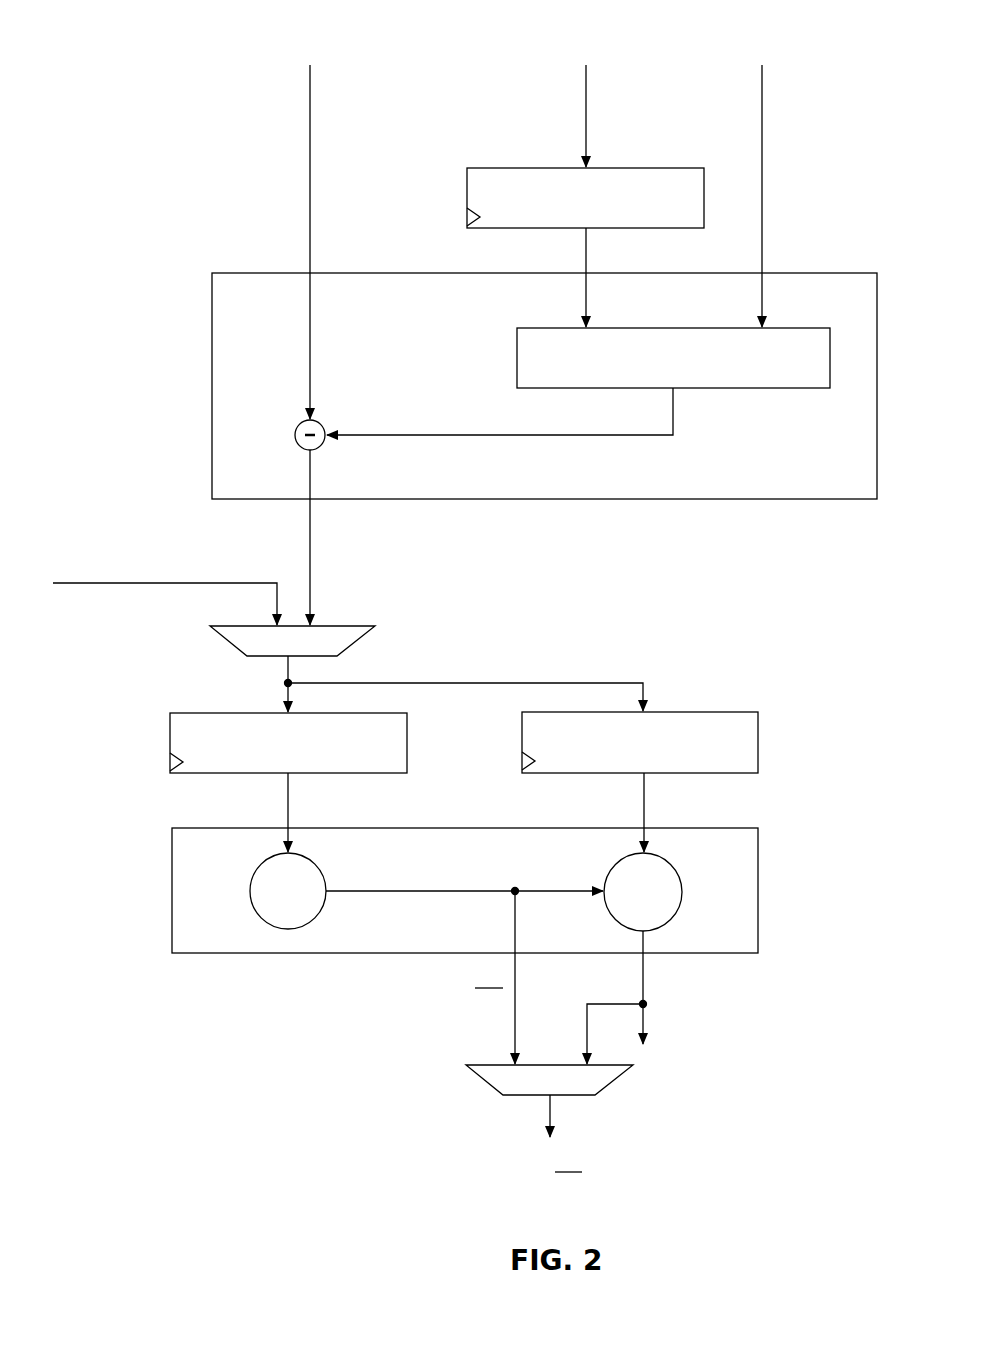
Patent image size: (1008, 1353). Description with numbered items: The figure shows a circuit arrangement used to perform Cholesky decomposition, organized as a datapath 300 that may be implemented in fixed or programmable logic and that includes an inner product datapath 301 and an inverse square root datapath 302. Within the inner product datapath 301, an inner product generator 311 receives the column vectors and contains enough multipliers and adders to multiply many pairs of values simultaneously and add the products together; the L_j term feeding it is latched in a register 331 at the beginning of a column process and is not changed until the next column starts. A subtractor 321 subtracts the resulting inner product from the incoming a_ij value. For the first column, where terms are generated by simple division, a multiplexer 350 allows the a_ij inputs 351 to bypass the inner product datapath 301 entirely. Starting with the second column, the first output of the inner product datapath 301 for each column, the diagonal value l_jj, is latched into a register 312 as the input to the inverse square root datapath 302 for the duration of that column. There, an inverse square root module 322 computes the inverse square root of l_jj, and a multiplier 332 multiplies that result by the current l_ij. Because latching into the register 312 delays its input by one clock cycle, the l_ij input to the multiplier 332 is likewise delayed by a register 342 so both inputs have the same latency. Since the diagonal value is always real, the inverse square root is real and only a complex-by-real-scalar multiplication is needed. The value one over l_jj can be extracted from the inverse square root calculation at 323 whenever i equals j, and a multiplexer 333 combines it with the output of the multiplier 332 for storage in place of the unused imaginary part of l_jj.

The datapath 300 is at (133, 68).
The inner product datapath 301 is at (812, 499).
The inverse square root datapath 302 is at (690, 828).
The inner product generator 311 is at (770, 388).
The register 312 is at (240, 712).
The subtractor 321 is at (318, 424).
The inverse square root module 322 is at (318, 862).
The extraction point for 1/l_jj 323 is at (515, 940).
The register 331 is at (530, 167).
The multiplier 332 is at (672, 862).
The multiplexer 333 is at (481, 1081).
The register 342 is at (692, 712).
The multiplexer 350 is at (345, 626).
The a_ij inputs 351 is at (163, 583).